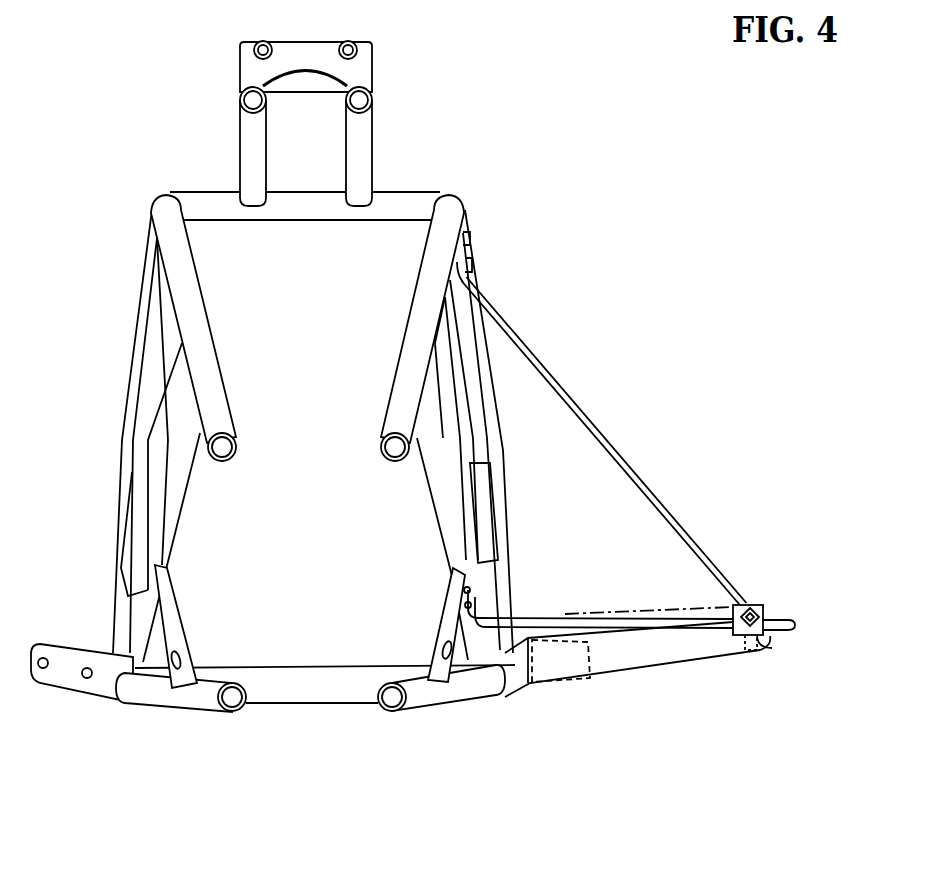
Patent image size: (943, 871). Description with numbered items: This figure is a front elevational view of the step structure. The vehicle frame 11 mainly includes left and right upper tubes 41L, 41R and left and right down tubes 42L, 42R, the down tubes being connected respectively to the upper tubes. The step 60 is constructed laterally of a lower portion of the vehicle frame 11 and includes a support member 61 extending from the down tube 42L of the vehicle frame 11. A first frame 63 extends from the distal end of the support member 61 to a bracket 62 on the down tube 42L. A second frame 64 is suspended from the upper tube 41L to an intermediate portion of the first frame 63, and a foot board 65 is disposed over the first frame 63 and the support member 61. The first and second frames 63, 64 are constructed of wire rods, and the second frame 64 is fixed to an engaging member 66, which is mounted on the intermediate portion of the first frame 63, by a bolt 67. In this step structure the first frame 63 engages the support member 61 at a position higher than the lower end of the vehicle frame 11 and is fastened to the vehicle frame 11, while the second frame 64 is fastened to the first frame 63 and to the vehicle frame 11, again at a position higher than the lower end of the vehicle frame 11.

The vehicle frame 11 is at (340, 443).
The step 60 is at (649, 521).
The right upper tube 41R is at (188, 318).
The left upper tube 41L is at (425, 323).
The right down tube 42R is at (160, 705).
The left down tube 42L is at (435, 700).
The support member 61 is at (690, 663).
The bracket 62 is at (460, 635).
The first frame 63 is at (560, 615).
The second frame 64 is at (600, 432).
The foot board 65 is at (763, 603).
The engaging member 66 is at (773, 627).
The bolt 67 is at (745, 604).